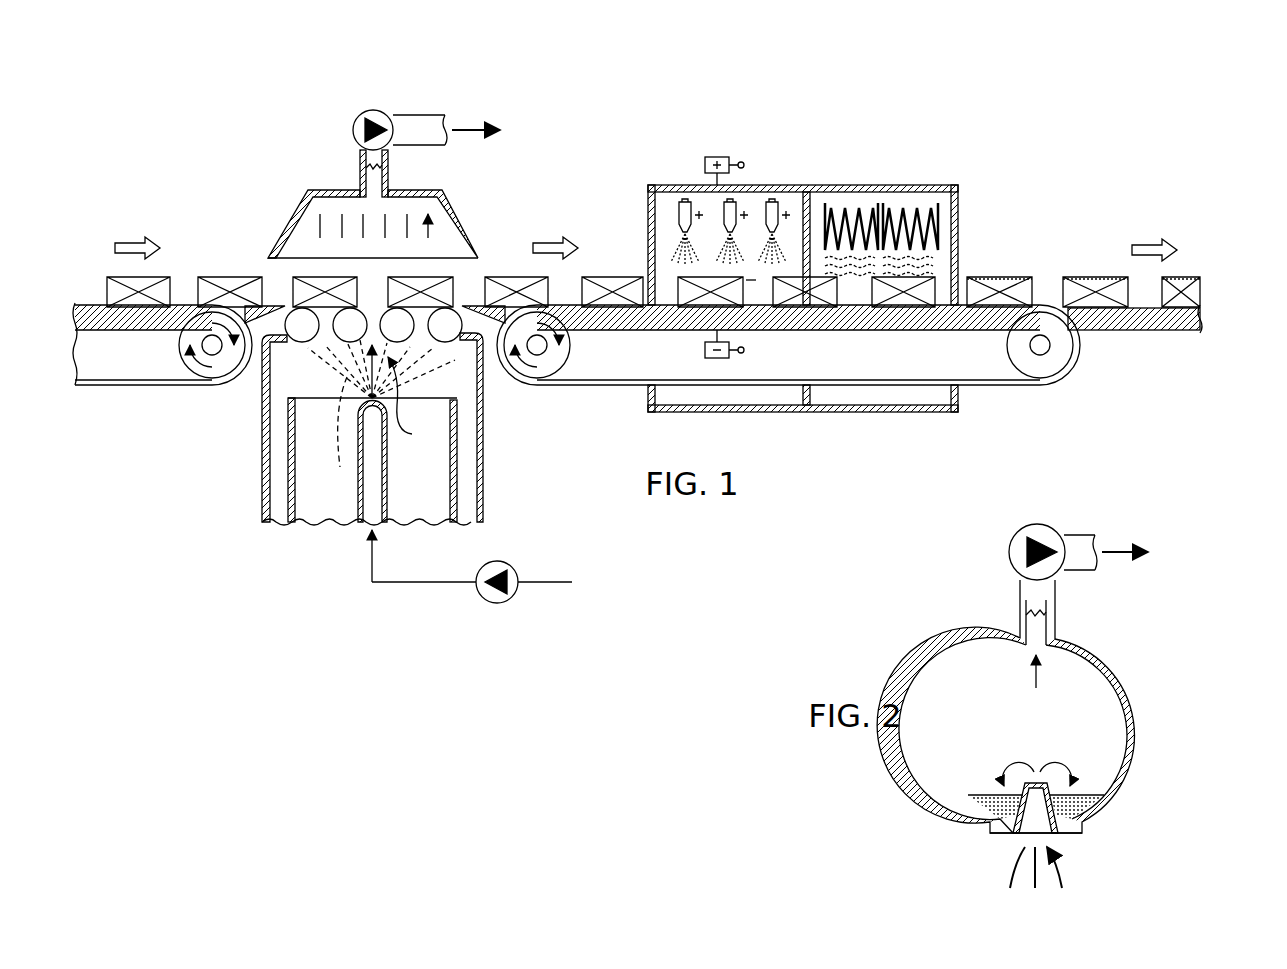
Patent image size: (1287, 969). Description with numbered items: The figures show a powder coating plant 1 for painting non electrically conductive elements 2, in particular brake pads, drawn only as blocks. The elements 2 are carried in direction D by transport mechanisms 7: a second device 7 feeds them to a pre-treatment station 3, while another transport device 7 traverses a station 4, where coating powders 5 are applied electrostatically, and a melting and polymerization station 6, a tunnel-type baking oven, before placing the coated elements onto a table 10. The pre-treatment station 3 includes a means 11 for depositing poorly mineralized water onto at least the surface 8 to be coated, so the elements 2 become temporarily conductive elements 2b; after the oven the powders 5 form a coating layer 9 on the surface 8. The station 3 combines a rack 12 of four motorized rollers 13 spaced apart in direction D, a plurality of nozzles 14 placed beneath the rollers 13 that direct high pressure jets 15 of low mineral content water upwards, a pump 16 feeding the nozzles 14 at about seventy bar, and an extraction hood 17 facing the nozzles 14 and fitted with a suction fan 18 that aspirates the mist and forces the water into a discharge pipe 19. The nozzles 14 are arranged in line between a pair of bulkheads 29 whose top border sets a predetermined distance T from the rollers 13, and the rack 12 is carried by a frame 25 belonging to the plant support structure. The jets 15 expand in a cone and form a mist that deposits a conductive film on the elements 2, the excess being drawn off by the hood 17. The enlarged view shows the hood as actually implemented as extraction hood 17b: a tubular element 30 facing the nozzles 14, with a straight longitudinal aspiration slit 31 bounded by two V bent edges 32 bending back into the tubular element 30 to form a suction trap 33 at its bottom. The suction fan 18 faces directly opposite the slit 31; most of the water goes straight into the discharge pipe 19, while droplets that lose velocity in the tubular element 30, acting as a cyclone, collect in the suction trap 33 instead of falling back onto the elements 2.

In FIG. 1, the powder coating plant 1 is at (1032, 148).
In FIG. 1, the non electrically conductive elements 2 is at (150, 278).
In FIG. 1, the electrically conductive elements 2b is at (505, 265).
In FIG. 1, the pre-treatment station 3 is at (485, 178).
In FIG. 1, the station 4 is at (770, 181).
In FIG. 1, the coating powders 5 is at (675, 246).
In FIG. 1, the melting and polymerization station 6 is at (892, 184).
In FIG. 1, the transport mechanism 7 is at (155, 395).
In FIG. 1, the surface to be coated 8 is at (248, 280).
In FIG. 1, the coating layer 9 is at (1000, 277).
In FIG. 1, the table 10 is at (1200, 320).
In FIG. 1, the means for depositing and/or adsorbing poorly mineralized water 11 is at (252, 441).
In FIG. 1, the rack 12 is at (470, 328).
In FIG. 1, the motorized rollers 13 is at (300, 332).
In FIG. 1, the nozzles 14 is at (372, 492).
In FIG. 1, the high pressure jets 15 is at (337, 435).
In FIG. 1, the pump 16 is at (505, 573).
In FIG. 1, the extraction hood 17 is at (315, 188).
In FIG. 2, the extraction hood 17b is at (1120, 650).
In FIG. 1, the suction fan 18 is at (372, 118).
In FIG. 2, the suction fan 18 is at (1028, 537).
In FIG. 1, the discharge pipe 19 is at (425, 122).
In FIG. 2, the discharge pipe 19 is at (1080, 540).
In FIG. 1, the frame 25 is at (256, 472).
In FIG. 1, the bulkheads 29 is at (292, 492).
In FIG. 2, the tubular element 30 is at (1128, 700).
In FIG. 2, the aspiration slit 31 is at (1032, 802).
In FIG. 2, the V bent edges 32 is at (992, 800).
In FIG. 2, the suction trap 33 is at (978, 793).
In FIG. 1, the direction D is at (141, 242).
In FIG. 1, the predetermined distance T is at (410, 401).